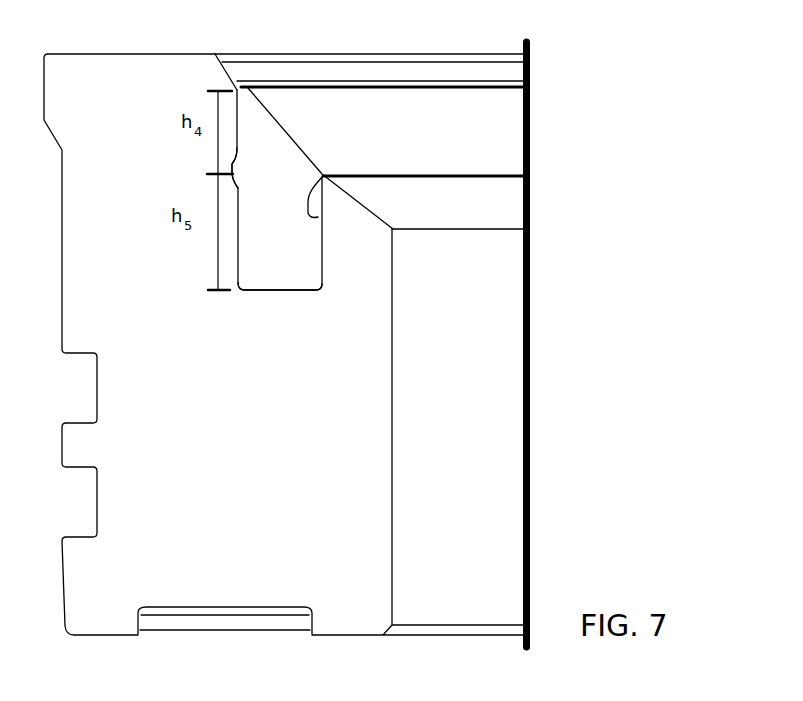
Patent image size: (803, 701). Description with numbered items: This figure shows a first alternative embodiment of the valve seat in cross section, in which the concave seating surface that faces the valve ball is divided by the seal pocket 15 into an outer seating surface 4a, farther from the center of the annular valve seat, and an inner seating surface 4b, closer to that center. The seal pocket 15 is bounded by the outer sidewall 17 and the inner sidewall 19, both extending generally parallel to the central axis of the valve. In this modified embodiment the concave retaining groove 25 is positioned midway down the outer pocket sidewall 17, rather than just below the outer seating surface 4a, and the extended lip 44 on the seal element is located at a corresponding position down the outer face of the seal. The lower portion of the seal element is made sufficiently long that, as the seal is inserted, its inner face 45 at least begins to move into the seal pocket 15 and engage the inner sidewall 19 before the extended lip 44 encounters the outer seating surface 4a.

The outer seating surface 4a is at (458, 68).
The inner seating surface 4b is at (502, 212).
The seal pocket 15 is at (263, 327).
The outer sidewall 17 is at (240, 258).
The inner sidewall 19 is at (322, 267).
The retaining groove 25 is at (226, 167).
The extended lip 44 is at (234, 167).
The inner face 45 is at (323, 174).